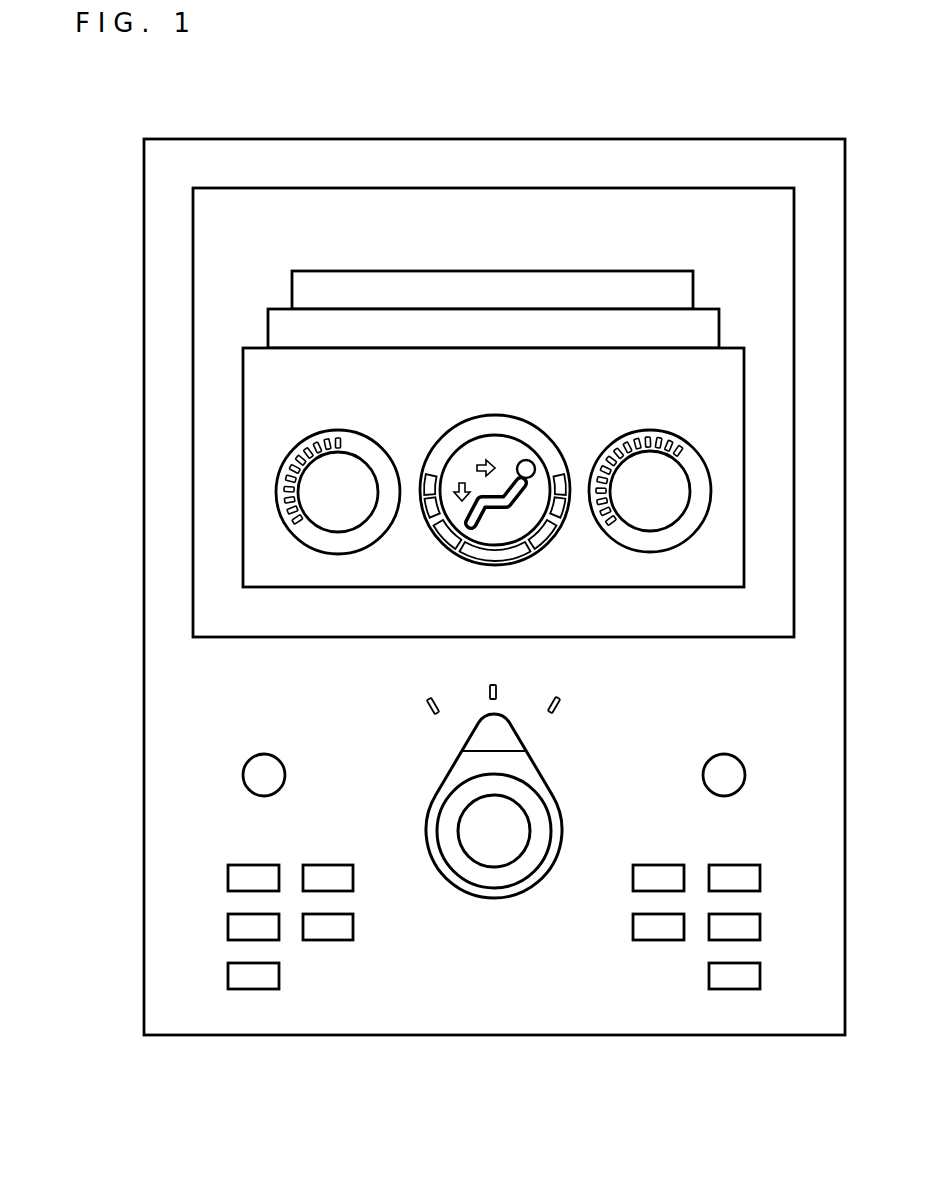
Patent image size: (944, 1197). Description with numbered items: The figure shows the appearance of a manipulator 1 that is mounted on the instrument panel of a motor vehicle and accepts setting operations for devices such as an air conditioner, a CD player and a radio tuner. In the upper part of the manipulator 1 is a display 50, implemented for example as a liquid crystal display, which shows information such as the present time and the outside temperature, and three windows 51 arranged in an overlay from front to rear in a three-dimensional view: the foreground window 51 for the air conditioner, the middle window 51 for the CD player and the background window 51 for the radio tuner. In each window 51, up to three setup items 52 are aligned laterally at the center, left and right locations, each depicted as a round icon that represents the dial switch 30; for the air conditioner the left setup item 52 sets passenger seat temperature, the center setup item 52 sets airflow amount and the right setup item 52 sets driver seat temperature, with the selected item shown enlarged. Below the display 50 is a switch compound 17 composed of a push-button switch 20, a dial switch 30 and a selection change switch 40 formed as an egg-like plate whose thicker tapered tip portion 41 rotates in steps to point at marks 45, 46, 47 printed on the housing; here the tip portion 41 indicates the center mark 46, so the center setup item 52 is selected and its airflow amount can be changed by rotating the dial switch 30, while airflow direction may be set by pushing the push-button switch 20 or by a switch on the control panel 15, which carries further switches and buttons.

The manipulator 1 is at (258, 139).
The control panel 15 is at (195, 923).
The switch compound 17 is at (476, 793).
The push-button switch 20 is at (520, 825).
The dial switch 30 is at (480, 877).
The selection change switch 40 is at (526, 766).
The tip portion 41 is at (510, 735).
The mark 45 is at (429, 698).
The mark 46 is at (493, 685).
The mark 47 is at (559, 698).
The display 50 is at (193, 232).
The window 51 is at (292, 290).
The setup item 52 is at (344, 433).